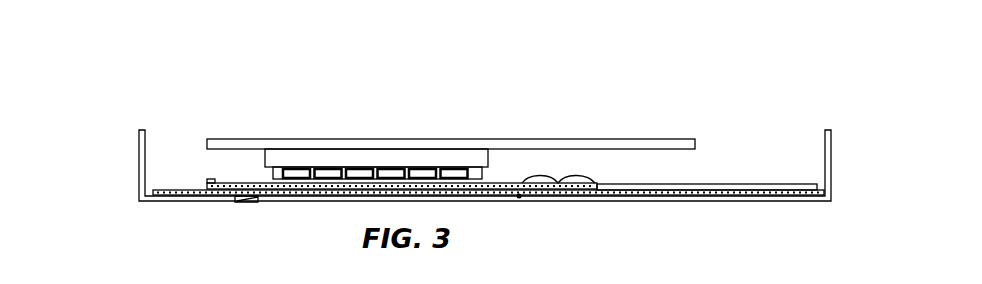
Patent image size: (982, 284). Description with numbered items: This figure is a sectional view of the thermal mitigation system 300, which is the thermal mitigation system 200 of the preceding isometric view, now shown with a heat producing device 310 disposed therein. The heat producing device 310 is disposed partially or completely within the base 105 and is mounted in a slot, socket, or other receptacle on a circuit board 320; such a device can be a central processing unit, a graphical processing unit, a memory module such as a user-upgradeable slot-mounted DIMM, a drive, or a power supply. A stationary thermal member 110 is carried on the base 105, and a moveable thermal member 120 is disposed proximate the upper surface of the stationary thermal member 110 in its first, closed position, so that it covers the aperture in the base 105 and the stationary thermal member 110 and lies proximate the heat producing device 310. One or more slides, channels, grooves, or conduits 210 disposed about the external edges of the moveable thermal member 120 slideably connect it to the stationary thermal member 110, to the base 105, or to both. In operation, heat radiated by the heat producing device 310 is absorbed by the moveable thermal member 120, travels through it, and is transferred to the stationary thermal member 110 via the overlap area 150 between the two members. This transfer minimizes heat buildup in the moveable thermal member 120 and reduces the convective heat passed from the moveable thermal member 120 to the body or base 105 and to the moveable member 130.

The base 105 is at (142, 129).
The stationary thermal member 110 is at (188, 192).
The moveable thermal member 120 is at (589, 188).
The moveable member 130 is at (267, 201).
The overlap area 150 is at (562, 177).
The thermal mitigation system 200 is at (128, 172).
The slide, channel, groove, or conduit 210 is at (710, 183).
The thermal mitigation system 300 is at (724, 42).
The heat producing device 310 is at (362, 158).
The circuit board 320 is at (545, 139).